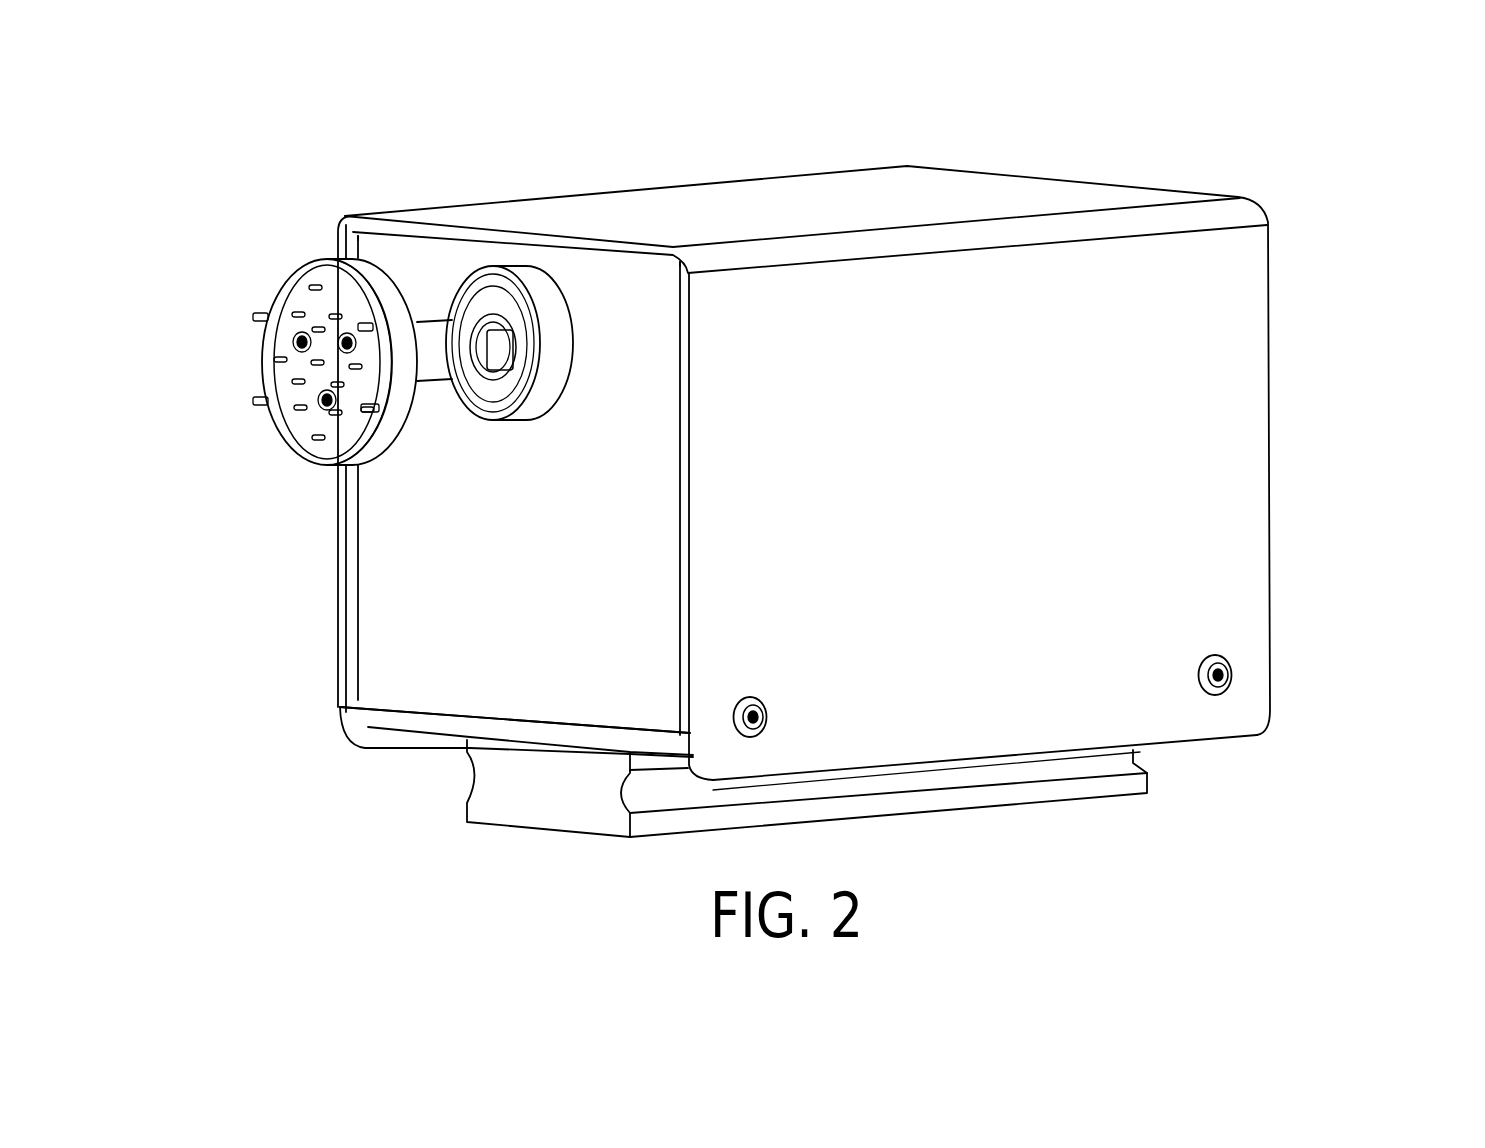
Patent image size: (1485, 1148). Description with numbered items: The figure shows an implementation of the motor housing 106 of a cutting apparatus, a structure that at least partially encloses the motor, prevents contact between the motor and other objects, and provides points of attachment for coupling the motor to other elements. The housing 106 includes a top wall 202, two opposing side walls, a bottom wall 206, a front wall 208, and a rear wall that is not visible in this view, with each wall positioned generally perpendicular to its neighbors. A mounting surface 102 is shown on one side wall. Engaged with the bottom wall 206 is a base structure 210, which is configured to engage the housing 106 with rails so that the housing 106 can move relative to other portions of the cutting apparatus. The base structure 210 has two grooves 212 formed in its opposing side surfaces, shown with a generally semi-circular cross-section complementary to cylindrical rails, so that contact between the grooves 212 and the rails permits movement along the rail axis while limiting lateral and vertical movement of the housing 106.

The mounting surface 102 is at (258, 205).
The motor housing 106 is at (1308, 110).
The top wall 202 is at (680, 215).
The bottom wall 206 is at (445, 730).
The front wall 208 is at (403, 640).
The base structure 210 is at (567, 785).
The grooves 212 is at (978, 775).